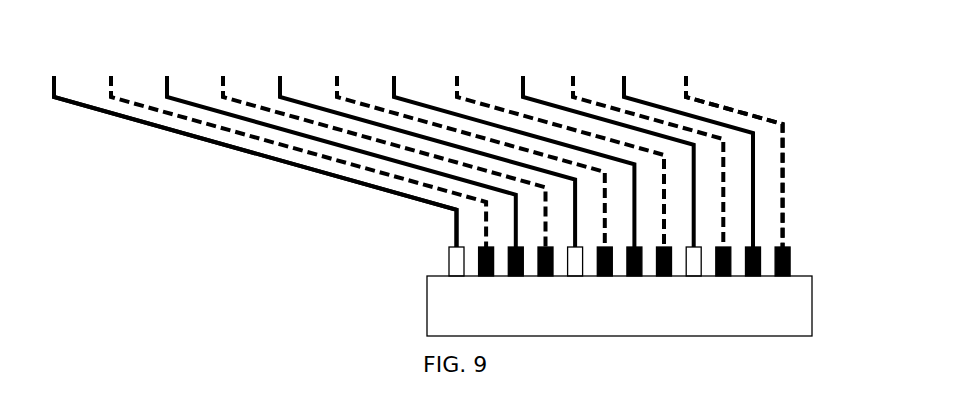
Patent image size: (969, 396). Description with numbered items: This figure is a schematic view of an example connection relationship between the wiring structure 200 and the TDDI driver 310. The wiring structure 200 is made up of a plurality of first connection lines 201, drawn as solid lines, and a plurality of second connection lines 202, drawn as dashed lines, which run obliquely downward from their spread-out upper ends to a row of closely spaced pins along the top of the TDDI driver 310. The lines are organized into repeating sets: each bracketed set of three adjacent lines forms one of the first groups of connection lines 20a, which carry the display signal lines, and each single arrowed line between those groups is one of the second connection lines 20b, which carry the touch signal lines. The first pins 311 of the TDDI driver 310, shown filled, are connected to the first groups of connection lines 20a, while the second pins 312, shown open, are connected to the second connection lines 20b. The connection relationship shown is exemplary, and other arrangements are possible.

The wiring structure 200 is at (813, 90).
The first groups of connection lines 20a is at (221, 56).
The second connection lines 20b is at (57, 52).
The first connection lines 201 is at (296, 168).
The second connection lines 202 is at (784, 180).
The TDDI driver 310 is at (638, 317).
The first pins 311 is at (790, 262).
The second pins 312 is at (449, 260).